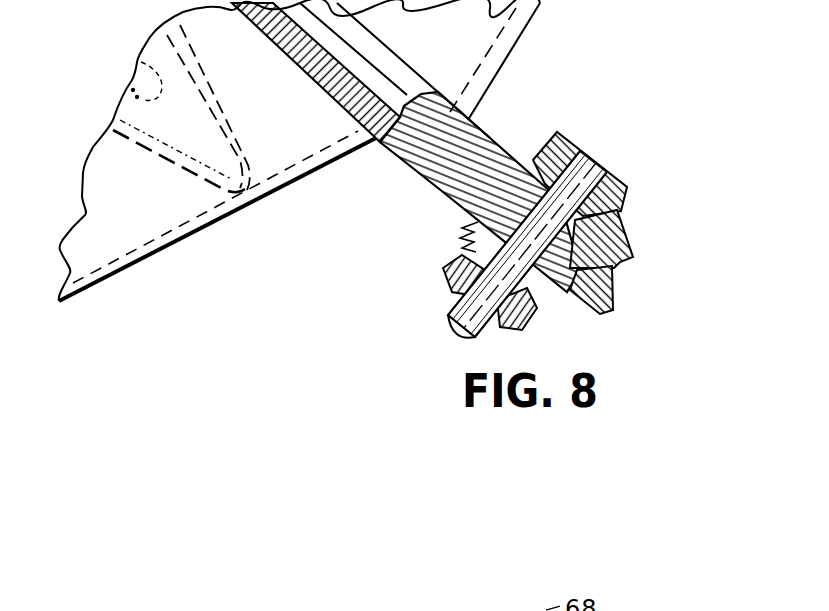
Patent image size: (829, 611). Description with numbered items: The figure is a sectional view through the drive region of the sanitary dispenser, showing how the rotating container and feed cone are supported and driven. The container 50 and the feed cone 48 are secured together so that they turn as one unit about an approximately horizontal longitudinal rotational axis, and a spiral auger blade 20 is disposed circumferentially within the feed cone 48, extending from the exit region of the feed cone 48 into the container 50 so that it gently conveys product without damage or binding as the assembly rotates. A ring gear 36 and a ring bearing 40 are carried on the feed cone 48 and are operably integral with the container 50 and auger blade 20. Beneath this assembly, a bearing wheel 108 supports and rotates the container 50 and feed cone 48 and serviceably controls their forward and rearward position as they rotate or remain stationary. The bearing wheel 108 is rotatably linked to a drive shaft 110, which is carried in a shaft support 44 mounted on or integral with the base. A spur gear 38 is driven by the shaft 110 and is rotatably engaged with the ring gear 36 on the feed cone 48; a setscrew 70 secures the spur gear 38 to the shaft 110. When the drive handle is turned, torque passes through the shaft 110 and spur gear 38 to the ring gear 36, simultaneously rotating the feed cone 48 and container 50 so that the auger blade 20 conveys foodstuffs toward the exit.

The auger blade 20 is at (176, 134).
The ring gear 36 is at (403, 151).
The spur gear 38 is at (612, 312).
The ring bearing 40 is at (465, 133).
The shaft support 44 is at (624, 209).
The feed cone 48 is at (208, 218).
The container 50 is at (497, 56).
The setscrew 70 is at (460, 221).
The bearing wheel 108 is at (620, 263).
The drive shaft 110 is at (450, 313).